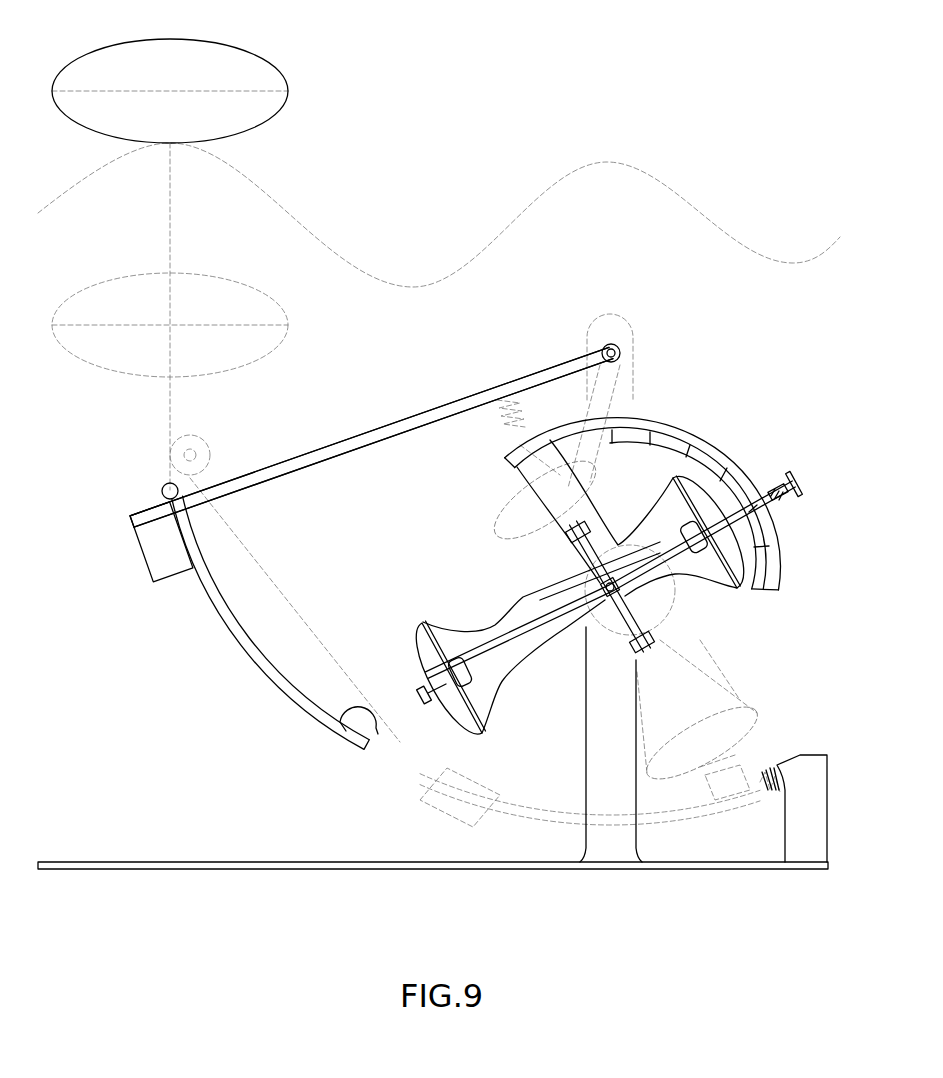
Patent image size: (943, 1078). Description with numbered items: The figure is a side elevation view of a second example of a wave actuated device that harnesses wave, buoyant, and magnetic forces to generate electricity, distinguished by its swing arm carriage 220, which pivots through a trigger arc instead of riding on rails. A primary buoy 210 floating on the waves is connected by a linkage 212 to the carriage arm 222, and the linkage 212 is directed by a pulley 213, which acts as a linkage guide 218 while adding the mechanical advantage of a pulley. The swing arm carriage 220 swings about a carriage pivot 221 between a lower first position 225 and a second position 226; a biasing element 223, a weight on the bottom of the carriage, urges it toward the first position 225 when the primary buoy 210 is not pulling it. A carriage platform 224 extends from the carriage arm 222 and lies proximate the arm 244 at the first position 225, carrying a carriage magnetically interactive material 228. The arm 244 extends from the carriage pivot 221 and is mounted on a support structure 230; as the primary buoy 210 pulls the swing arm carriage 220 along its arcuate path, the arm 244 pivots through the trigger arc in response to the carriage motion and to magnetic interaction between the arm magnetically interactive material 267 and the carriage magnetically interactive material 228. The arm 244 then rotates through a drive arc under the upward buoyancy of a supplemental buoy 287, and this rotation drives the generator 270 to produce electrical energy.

The primary buoy 210 is at (170, 40).
The linkage 212 is at (172, 240).
The pulley 213 is at (192, 435).
The linkage guide 218 is at (208, 485).
The swing arm carriage 220 is at (140, 502).
The carriage pivot 221 is at (611, 344).
The carriage arm 222 is at (480, 395).
The biasing element 223 is at (158, 557).
The carriage platform 224 is at (258, 654).
The first position 225 is at (500, 598).
The second position 226 is at (357, 432).
The carriage magnetically interactive material 228 is at (362, 718).
The support structure 230 is at (572, 766).
The arm 244 is at (542, 670).
The arm magnetically interactive material 267 is at (448, 690).
The generator 270 is at (658, 609).
The supplemental buoy 287 is at (418, 642).